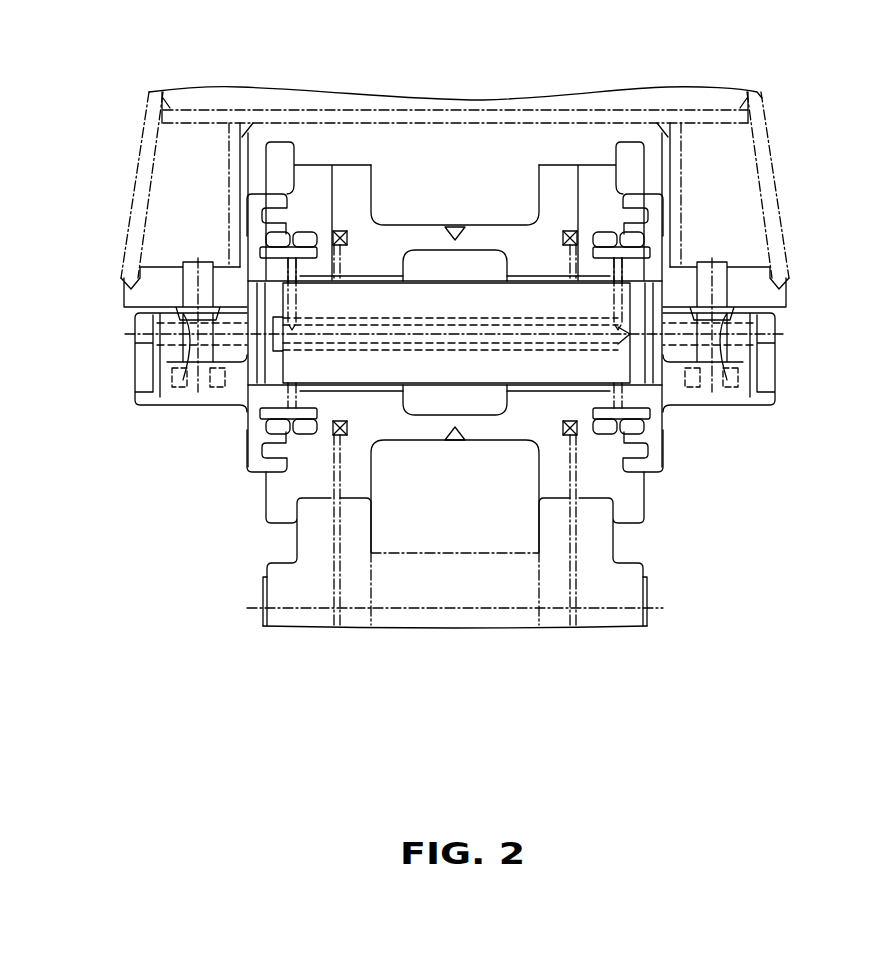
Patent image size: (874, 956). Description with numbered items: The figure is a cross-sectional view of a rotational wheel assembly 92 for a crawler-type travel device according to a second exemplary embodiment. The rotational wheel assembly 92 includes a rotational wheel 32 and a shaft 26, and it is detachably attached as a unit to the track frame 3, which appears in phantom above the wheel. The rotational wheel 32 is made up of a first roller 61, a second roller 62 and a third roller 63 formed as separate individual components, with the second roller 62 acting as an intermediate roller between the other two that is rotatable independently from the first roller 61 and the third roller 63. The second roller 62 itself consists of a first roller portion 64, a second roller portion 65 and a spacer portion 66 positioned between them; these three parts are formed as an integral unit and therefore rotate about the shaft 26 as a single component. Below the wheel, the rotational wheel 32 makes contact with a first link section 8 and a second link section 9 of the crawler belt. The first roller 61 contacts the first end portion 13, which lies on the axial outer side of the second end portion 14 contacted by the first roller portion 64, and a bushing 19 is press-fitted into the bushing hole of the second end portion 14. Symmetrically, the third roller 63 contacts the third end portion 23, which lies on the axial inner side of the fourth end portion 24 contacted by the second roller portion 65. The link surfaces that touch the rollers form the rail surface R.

The track frame 3 is at (143, 162).
The rotational wheel 32 is at (512, 139).
The first roller 61 is at (618, 137).
The second roller 62 is at (482, 163).
The third roller 63 is at (305, 137).
The first roller portion 64 is at (555, 177).
The second roller portion 65 is at (355, 170).
The spacer portion 66 is at (438, 225).
The shaft 26 is at (453, 370).
The third end portion 23 is at (310, 531).
The fourth end portion 24 is at (363, 527).
The second end portion 14 is at (555, 520).
The first end portion 13 is at (613, 533).
The bushing 19 is at (473, 617).
The second link section 9 is at (338, 639).
The first link section 8 is at (592, 639).
The rotational wheel assembly 92 is at (462, 378).
The rail surface R is at (317, 495).